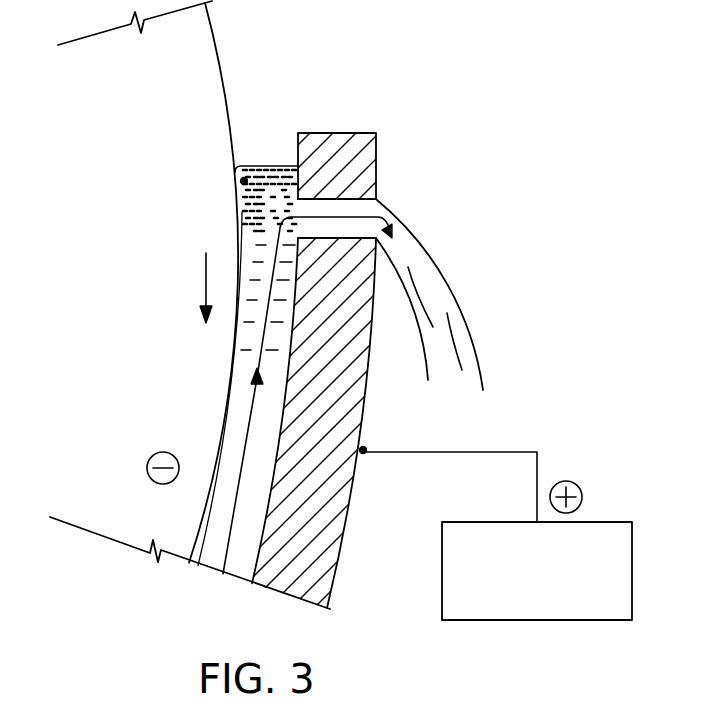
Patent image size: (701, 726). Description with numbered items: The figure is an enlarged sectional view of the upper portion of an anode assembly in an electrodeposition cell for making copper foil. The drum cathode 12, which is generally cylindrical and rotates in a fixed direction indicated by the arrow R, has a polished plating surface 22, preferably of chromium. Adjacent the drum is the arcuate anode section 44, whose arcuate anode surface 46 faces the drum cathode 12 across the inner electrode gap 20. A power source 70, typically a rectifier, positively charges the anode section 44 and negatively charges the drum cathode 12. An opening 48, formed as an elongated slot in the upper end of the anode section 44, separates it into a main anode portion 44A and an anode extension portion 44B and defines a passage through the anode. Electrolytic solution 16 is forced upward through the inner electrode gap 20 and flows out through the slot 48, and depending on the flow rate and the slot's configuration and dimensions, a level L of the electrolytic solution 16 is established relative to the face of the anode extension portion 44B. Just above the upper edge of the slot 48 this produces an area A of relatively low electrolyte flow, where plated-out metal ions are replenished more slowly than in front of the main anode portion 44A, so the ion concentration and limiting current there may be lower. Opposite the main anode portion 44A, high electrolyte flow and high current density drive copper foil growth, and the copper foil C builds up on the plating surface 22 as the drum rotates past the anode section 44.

The drum cathode 12 is at (212, 32).
The plating surface 22 is at (218, 63).
The electrolytic solution 16 is at (247, 212).
The inner electrode gap 20 is at (262, 157).
The anode section 44 is at (350, 363).
The main anode portion 44A is at (353, 403).
The anode extension portion 44B is at (348, 145).
The arcuate anode surface 46 is at (273, 455).
The opening 48 is at (365, 207).
The power source 70 is at (603, 520).
The area of electrolytic solution A is at (244, 181).
The level of electrolytic solution L is at (277, 167).
The direction of rotation R is at (208, 282).
The copper foil C is at (203, 525).